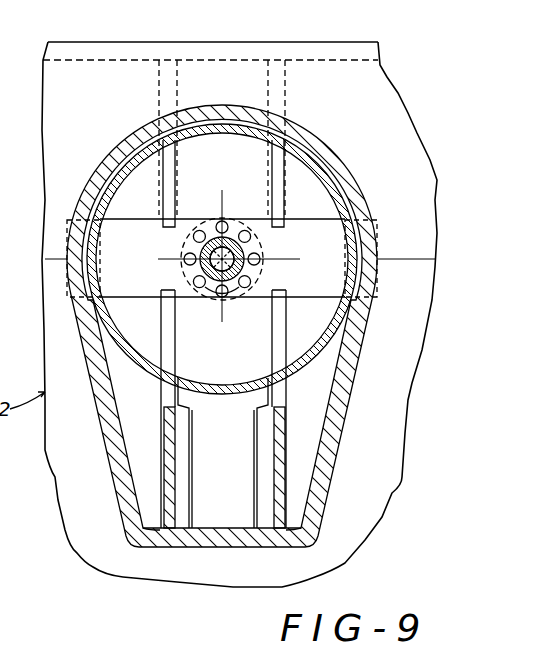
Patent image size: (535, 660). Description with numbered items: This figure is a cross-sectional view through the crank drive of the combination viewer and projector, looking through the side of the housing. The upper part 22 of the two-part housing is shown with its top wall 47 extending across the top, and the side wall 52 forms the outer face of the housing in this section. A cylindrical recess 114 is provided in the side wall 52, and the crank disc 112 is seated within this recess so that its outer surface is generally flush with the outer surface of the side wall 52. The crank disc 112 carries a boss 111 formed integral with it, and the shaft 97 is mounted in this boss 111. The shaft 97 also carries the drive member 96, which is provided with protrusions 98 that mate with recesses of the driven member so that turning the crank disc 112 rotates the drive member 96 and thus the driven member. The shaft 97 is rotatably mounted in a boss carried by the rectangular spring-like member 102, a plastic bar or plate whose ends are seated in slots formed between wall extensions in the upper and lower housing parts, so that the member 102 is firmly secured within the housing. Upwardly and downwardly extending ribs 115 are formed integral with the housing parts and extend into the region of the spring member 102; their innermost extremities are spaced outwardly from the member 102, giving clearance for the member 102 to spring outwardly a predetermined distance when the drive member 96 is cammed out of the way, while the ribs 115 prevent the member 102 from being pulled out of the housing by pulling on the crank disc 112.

The upper part of housing 22 is at (49, 87).
The top wall 47 is at (179, 21).
The side wall 52 is at (82, 130).
The drive member 96 is at (223, 218).
The shaft 97 is at (197, 263).
The protrusions 98 is at (258, 248).
The spring-like member 102 is at (160, 226).
The boss 111 is at (236, 292).
The crank disc 112 is at (220, 388).
The cylindrical recess 114 is at (306, 165).
The ribs 115 is at (270, 163).